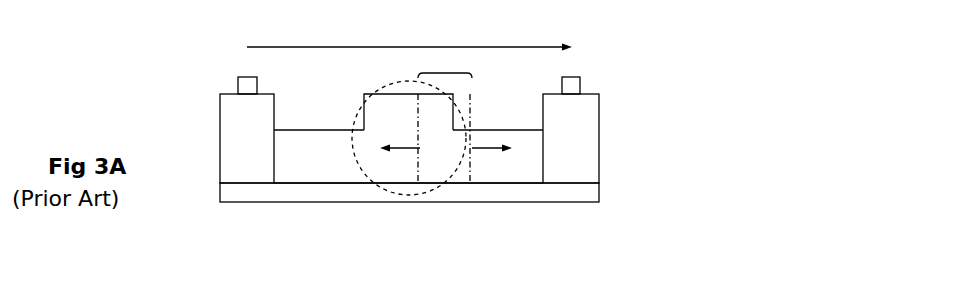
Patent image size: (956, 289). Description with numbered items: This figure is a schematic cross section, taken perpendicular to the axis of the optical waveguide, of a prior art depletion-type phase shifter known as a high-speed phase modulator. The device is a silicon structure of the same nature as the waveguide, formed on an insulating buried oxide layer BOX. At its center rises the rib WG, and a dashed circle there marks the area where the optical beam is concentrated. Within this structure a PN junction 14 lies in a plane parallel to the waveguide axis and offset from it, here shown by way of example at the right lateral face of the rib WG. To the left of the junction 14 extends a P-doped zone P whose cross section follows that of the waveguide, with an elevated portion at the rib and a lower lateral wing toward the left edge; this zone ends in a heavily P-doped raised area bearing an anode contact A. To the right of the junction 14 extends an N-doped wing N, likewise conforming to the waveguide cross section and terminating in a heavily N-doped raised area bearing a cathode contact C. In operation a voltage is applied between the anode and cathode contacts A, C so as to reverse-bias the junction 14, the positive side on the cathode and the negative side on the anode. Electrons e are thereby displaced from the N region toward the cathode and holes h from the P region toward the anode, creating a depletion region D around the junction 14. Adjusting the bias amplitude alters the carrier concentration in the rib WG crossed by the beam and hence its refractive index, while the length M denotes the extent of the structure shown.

The PN junction 14 is at (452, 155).
The device length M is at (408, 38).
The depletion region D is at (445, 118).
The rib WG is at (374, 124).
The buried oxide layer BOX is at (409, 192).
The holes h is at (401, 157).
The electrons e is at (491, 158).
The P-doped zone P is at (319, 156).
The N-doped wing N is at (498, 156).
The anode contact A is at (251, 75).
The cathode contact C is at (580, 75).